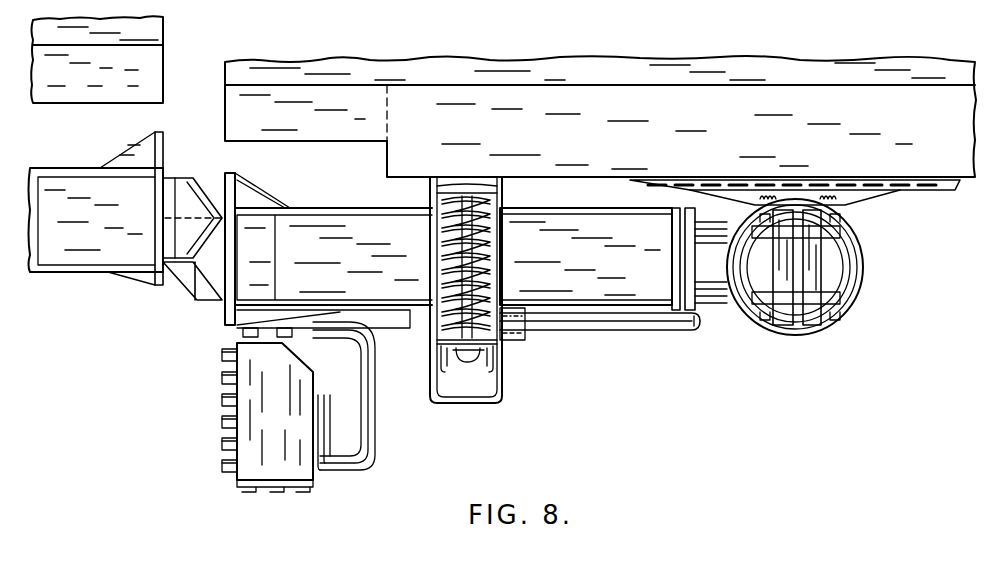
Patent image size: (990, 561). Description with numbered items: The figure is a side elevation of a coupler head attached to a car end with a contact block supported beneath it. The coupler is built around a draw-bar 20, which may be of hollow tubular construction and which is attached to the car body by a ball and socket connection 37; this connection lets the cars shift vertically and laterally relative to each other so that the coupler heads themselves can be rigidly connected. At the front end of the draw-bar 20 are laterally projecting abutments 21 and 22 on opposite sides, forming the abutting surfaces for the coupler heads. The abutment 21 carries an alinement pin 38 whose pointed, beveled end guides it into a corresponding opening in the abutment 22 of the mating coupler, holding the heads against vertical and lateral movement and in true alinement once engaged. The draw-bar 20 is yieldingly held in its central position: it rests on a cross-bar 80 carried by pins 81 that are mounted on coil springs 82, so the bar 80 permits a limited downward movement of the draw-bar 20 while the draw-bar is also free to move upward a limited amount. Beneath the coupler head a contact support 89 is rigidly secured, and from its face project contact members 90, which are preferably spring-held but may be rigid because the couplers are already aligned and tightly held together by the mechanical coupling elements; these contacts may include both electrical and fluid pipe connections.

The draw-bar 20 is at (558, 232).
The laterally projecting abutment 21 is at (157, 212).
The laterally projecting abutment 22 is at (253, 235).
The ball and socket connection 37 is at (838, 265).
The alinement pin 38 is at (212, 152).
The cross-bar 80 is at (492, 360).
The pin 81 is at (487, 272).
The coil spring 82 is at (432, 258).
The contact support 89 is at (285, 460).
The contact member 90 is at (222, 466).